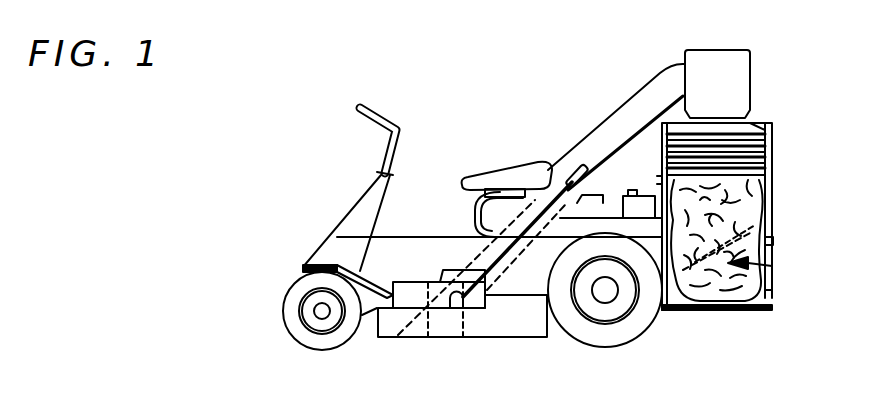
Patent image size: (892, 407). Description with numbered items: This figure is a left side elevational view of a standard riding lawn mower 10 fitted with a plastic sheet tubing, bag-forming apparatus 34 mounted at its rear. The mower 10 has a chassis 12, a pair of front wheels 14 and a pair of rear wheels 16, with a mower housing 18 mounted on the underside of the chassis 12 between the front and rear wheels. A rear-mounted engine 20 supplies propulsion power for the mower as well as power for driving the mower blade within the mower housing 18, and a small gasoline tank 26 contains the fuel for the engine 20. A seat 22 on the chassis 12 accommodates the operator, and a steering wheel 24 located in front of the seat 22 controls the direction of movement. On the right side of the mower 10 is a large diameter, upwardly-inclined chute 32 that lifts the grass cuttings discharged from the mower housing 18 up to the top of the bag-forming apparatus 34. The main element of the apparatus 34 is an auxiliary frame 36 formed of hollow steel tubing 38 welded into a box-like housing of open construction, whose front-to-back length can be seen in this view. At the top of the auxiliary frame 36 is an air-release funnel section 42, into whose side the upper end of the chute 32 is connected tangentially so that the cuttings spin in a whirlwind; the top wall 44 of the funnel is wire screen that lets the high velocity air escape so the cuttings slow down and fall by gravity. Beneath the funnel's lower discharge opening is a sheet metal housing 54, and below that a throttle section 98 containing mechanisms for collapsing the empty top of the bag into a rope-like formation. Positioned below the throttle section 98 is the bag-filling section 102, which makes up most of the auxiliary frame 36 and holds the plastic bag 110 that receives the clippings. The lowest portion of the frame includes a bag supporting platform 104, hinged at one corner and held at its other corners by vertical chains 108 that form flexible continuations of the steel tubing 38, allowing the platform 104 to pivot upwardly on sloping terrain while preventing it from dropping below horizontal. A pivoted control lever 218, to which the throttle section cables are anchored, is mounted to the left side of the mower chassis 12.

The riding lawn mower 10 is at (326, 243).
The chassis 12 is at (393, 244).
The front wheels 14 is at (303, 338).
The rear wheels 16 is at (620, 332).
The mower housing 18 is at (403, 328).
The engine 20 is at (601, 215).
The seat 22 is at (470, 180).
The steering wheel 24 is at (382, 116).
The gasoline tank 26 is at (640, 196).
The chute 32 is at (650, 97).
The bag-forming apparatus 34 is at (774, 220).
The auxiliary frame 36 is at (761, 174).
The hollow steel tubing 38 is at (772, 217).
The air-release funnel section 42 is at (731, 103).
The top wall 44 is at (742, 65).
The sheet metal housing 54 is at (757, 127).
The throttle section 98 is at (758, 162).
The bag-filling section 102 is at (768, 232).
The bag supporting platform 104 is at (722, 302).
The vertical chains 108 is at (772, 295).
The plastic bag 110 is at (772, 266).
The pivoted control lever 218 is at (567, 180).